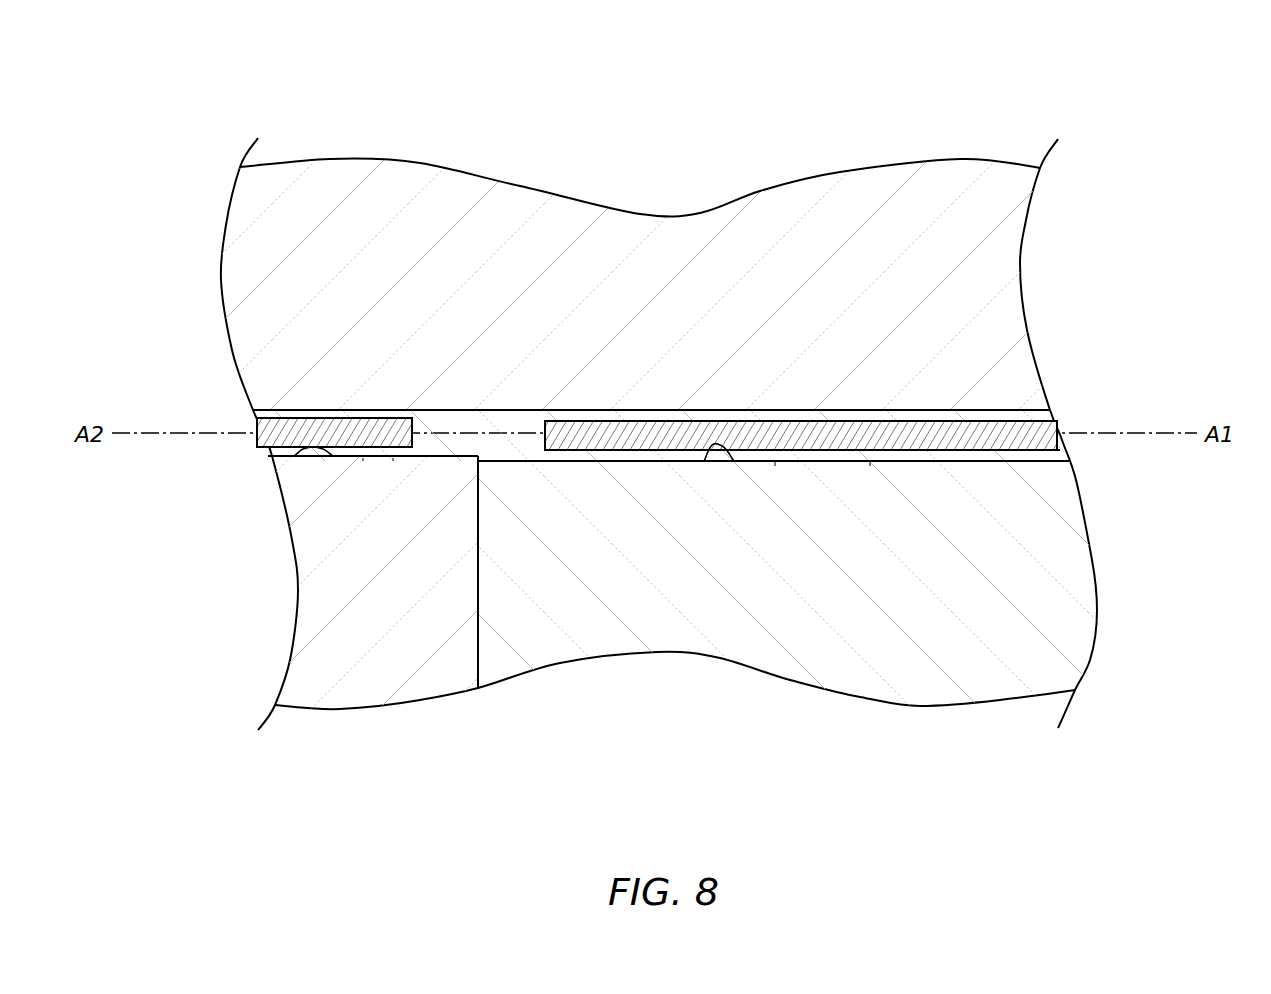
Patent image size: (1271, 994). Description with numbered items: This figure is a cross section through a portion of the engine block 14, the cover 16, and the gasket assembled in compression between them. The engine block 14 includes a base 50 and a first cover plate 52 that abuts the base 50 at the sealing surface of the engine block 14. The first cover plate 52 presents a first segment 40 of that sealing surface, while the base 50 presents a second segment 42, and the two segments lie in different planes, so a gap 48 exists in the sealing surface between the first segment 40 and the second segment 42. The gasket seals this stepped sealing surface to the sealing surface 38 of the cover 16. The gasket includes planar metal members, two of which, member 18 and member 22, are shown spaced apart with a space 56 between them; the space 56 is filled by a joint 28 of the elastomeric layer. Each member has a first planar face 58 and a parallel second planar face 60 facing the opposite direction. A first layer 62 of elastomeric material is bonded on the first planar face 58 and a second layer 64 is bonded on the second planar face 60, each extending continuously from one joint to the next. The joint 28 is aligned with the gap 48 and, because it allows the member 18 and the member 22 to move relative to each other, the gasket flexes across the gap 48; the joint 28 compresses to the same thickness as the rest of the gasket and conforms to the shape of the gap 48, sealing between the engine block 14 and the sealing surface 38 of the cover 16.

The engine block 14 is at (550, 702).
The cover 16 is at (888, 205).
The member 18 is at (1032, 423).
The member 22 is at (280, 417).
The joint 28 is at (503, 432).
The sealing surface 38 is at (458, 432).
The first segment 40 is at (704, 462).
The second segment 42 is at (291, 456).
The gap 48 is at (487, 472).
The base 50 is at (1050, 588).
The first cover plate 52 is at (315, 603).
The space 56 is at (453, 461).
The first planar face 58 is at (345, 418).
The second planar face 60 is at (363, 458).
The first layer 62 is at (387, 418).
The second layer 64 is at (393, 458).